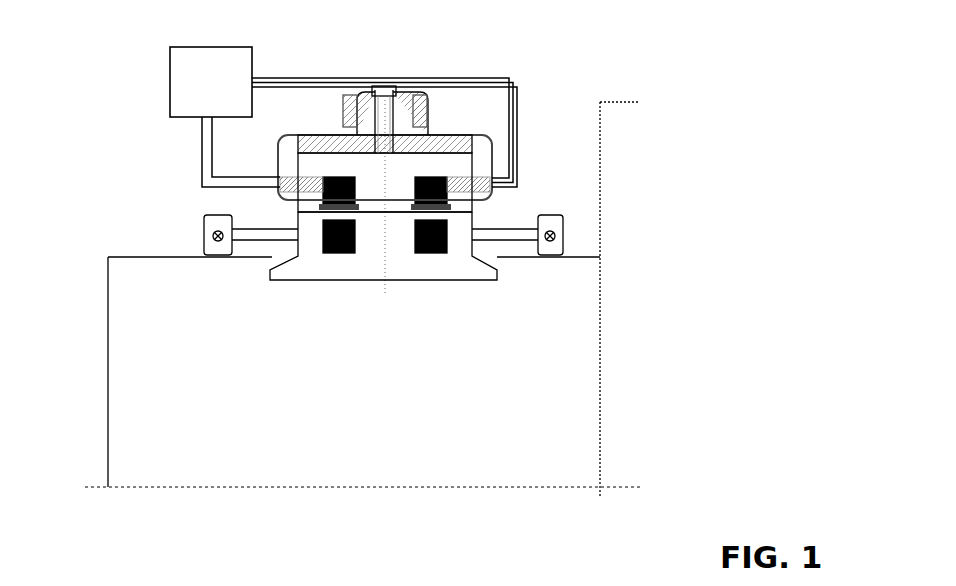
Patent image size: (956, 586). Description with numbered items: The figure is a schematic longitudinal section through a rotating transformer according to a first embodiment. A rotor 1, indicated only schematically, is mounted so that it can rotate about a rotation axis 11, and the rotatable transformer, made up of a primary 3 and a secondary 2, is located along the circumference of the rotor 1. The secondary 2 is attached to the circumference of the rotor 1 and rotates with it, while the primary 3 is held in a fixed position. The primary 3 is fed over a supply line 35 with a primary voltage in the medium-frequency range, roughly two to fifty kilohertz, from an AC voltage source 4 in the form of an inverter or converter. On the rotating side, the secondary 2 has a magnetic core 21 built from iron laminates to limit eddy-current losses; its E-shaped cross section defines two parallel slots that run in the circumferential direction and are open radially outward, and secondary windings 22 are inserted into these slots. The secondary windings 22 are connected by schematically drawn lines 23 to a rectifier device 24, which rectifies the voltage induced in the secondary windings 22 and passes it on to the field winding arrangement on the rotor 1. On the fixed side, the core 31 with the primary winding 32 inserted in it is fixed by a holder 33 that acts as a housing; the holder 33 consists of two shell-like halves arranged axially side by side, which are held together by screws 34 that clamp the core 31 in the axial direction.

The rotor 1 is at (395, 437).
The rotation axis 11 is at (623, 488).
The secondary 2 is at (260, 292).
The magnetic core 21 is at (492, 268).
The secondary winding 22 is at (432, 255).
The line 23 is at (520, 229).
The rectifier device 24 is at (560, 245).
The primary 3 is at (160, 183).
The core 31 is at (434, 162).
The primary winding 32 is at (322, 172).
The holder 33 is at (426, 136).
The screw 34 is at (383, 96).
The supply line 35 is at (520, 118).
The AC voltage source 4 is at (214, 99).